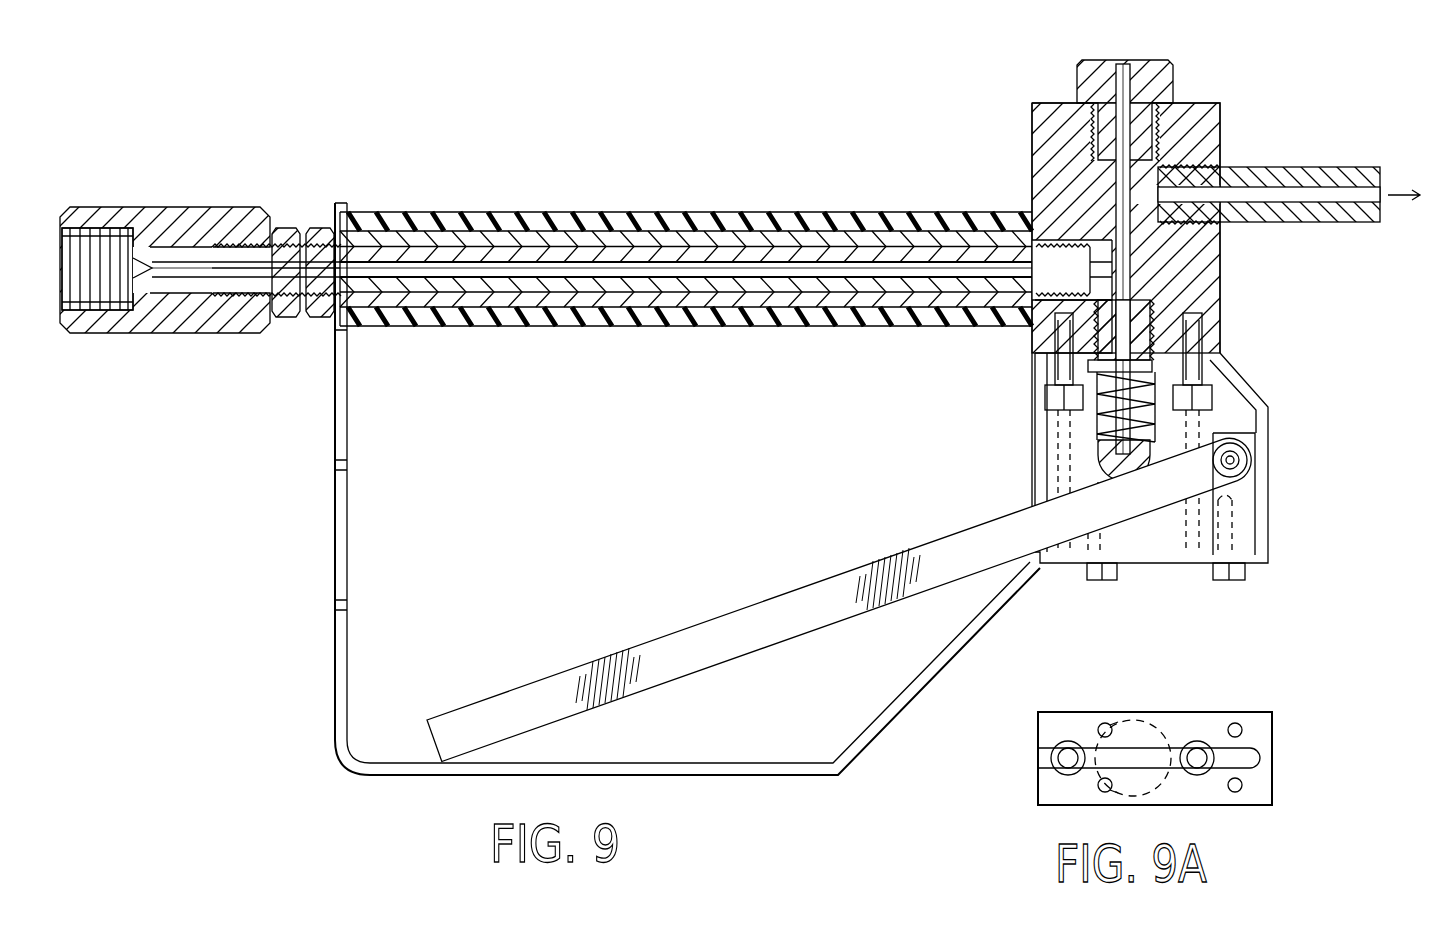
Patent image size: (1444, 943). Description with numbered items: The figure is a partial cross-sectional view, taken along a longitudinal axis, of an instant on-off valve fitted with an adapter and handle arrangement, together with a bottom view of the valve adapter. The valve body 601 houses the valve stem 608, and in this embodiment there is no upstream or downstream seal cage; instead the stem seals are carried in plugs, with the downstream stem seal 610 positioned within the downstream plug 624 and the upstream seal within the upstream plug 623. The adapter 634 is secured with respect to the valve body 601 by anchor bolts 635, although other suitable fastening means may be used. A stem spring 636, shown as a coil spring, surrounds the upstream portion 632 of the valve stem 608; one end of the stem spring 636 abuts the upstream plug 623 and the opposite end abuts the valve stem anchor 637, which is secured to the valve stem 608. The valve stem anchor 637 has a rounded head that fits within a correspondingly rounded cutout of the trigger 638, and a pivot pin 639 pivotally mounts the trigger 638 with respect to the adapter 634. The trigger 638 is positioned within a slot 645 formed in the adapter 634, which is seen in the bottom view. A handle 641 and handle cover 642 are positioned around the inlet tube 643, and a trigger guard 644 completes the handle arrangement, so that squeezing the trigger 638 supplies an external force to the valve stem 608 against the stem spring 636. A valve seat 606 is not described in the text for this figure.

In FIG. 9, the valve body 601 is at (1045, 130).
In FIG. 9, the valve seat 606 is at (1040, 343).
In FIG. 9, the valve stem 608 is at (1108, 178).
In FIG. 9, the downstream stem seal 610 is at (1205, 132).
In FIG. 9, the upstream plug 623 is at (1163, 340).
In FIG. 9, the downstream plug 624 is at (1165, 87).
In FIG. 9, the upstream portion 632 is at (1042, 368).
In FIG. 9, the adapter 634 is at (1262, 420).
In FIG. 9, the anchor bolts 635 is at (1045, 400).
In FIG. 9, the stem spring 636 is at (1098, 420).
In FIG. 9, the valve stem anchor 637 is at (1095, 470).
In FIG. 9, the trigger 638 is at (755, 612).
In FIG. 9, the pivot pin 639 is at (1250, 462).
In FIG. 9, the handle 641 is at (633, 237).
In FIG. 9, the handle cover 642 is at (748, 222).
In FIG. 9, the inlet tube 643 is at (860, 250).
In FIG. 9, the trigger guard 644 is at (348, 472).
In FIG. 9A, the slot 645 is at (1265, 752).